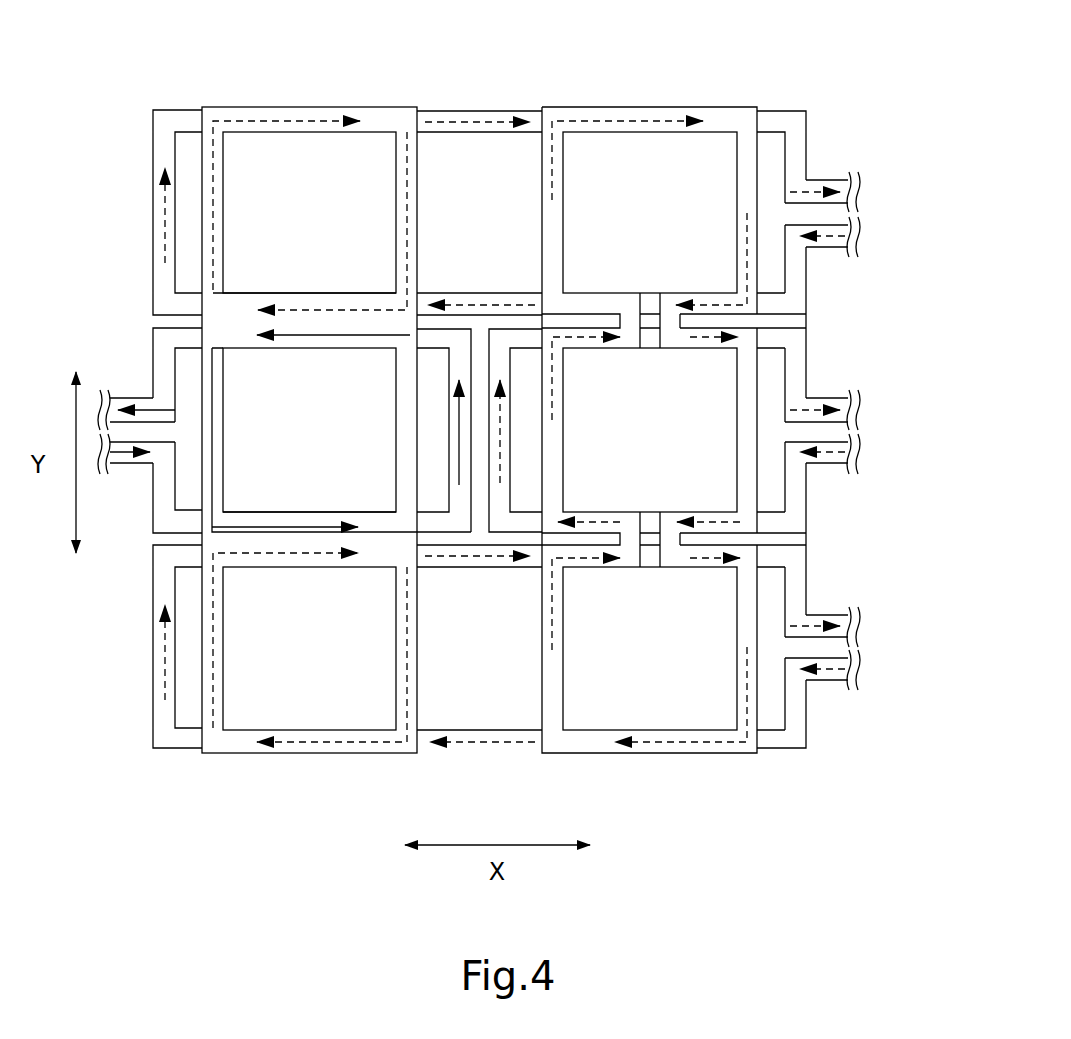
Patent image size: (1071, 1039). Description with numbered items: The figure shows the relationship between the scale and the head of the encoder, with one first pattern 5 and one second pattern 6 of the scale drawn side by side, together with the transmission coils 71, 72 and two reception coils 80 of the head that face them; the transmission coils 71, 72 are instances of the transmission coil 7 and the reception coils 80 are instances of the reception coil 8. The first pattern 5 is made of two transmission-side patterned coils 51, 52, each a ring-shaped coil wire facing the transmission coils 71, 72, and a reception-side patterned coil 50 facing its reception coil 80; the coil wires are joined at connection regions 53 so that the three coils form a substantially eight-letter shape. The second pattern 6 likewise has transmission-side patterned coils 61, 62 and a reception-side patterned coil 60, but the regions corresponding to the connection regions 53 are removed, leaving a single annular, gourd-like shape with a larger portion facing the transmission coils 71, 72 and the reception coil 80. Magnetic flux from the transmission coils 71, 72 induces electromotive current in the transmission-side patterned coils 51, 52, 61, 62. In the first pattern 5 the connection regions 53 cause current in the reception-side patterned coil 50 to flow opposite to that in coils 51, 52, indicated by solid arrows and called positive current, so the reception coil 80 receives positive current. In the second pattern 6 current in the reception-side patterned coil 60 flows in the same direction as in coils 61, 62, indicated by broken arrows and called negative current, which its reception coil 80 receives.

The first pattern 5 is at (336, 412).
The second pattern 6 is at (674, 412).
The transmission coil 7 is at (864, 383).
The reception coil 8 is at (489, 390).
The reception-side patterned coil 50 is at (227, 447).
The transmission-side patterned coil 51 is at (300, 107).
The transmission-side patterned coil 52 is at (290, 757).
The connection region 53 is at (296, 293).
The reception-side patterned coil 60 is at (563, 447).
The transmission-side patterned coil 61 is at (640, 107).
The transmission-side patterned coil 62 is at (635, 757).
The transmission coil 71 is at (846, 165).
The transmission coil 72 is at (840, 607).
The reception coil 80 is at (838, 392).